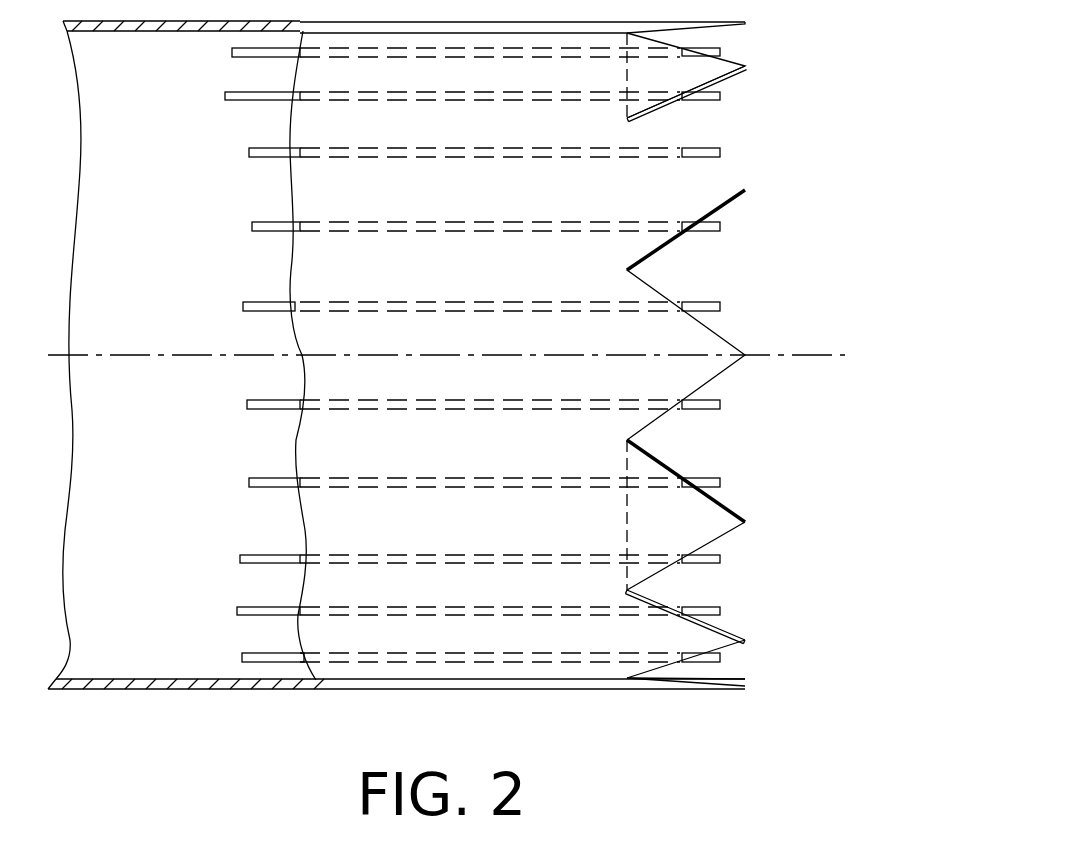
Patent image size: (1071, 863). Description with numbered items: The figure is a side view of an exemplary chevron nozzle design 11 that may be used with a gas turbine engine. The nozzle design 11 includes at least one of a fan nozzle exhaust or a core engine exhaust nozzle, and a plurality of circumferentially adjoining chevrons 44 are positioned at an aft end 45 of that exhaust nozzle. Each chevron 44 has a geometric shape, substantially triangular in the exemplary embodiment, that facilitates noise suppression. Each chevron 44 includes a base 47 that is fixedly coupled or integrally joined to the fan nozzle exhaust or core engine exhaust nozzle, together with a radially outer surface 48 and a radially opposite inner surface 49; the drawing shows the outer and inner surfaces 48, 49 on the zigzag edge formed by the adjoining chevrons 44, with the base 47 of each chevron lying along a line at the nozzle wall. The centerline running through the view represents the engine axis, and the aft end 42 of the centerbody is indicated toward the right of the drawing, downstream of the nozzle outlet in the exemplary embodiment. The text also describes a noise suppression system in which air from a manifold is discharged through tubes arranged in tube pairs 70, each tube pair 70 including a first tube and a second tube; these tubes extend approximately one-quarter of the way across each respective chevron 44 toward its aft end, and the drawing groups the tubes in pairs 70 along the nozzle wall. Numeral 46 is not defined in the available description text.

The nozzle design 11 is at (432, 593).
The aft end of centerbody 42 is at (823, 355).
The chevron 44 is at (712, 192).
The aft end 45 is at (582, 279).
The first wall panel 46 is at (712, 63).
The base 47 is at (626, 93).
The radially outer surface 48 is at (718, 178).
The radially inner surface 49 is at (718, 95).
The tube pair 70 is at (250, 243).